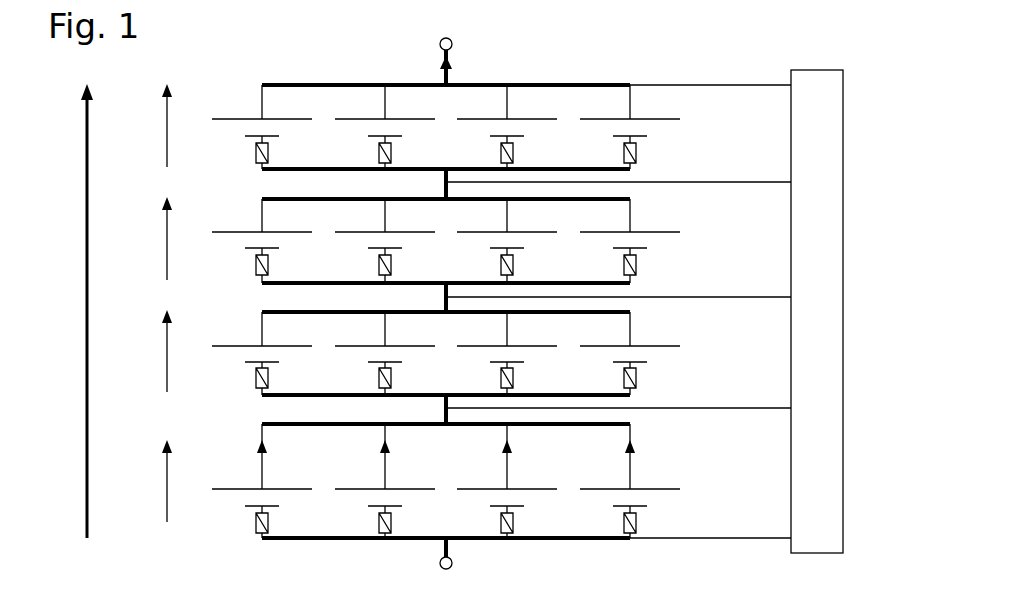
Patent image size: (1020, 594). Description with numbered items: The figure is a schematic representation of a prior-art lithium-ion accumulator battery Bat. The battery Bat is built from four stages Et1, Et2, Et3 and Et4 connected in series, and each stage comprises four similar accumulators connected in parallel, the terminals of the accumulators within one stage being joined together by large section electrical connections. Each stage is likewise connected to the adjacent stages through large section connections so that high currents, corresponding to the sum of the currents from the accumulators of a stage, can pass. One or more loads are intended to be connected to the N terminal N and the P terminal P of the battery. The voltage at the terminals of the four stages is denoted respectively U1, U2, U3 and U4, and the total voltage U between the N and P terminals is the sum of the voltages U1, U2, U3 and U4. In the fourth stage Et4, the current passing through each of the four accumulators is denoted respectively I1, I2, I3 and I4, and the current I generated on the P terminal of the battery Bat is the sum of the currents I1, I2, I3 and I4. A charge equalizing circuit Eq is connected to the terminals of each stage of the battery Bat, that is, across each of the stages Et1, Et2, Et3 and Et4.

The lithium-ion accumulator battery Bat is at (510, 77).
The first stage Et1 is at (678, 86).
The second stage Et2 is at (678, 200).
The third stage Et3 is at (678, 313).
The fourth stage Et4 is at (678, 425).
The charge equalizing circuit Eq is at (817, 70).
The P terminal P is at (457, 59).
The N terminal N is at (458, 557).
The current I is at (439, 60).
The current I1 is at (248, 452).
The current I2 is at (370, 452).
The current I3 is at (491, 452).
The current I4 is at (617, 452).
The total voltage U is at (78, 311).
The voltage U1 is at (148, 125).
The voltage U2 is at (148, 238).
The voltage U3 is at (148, 351).
The voltage U4 is at (148, 481).